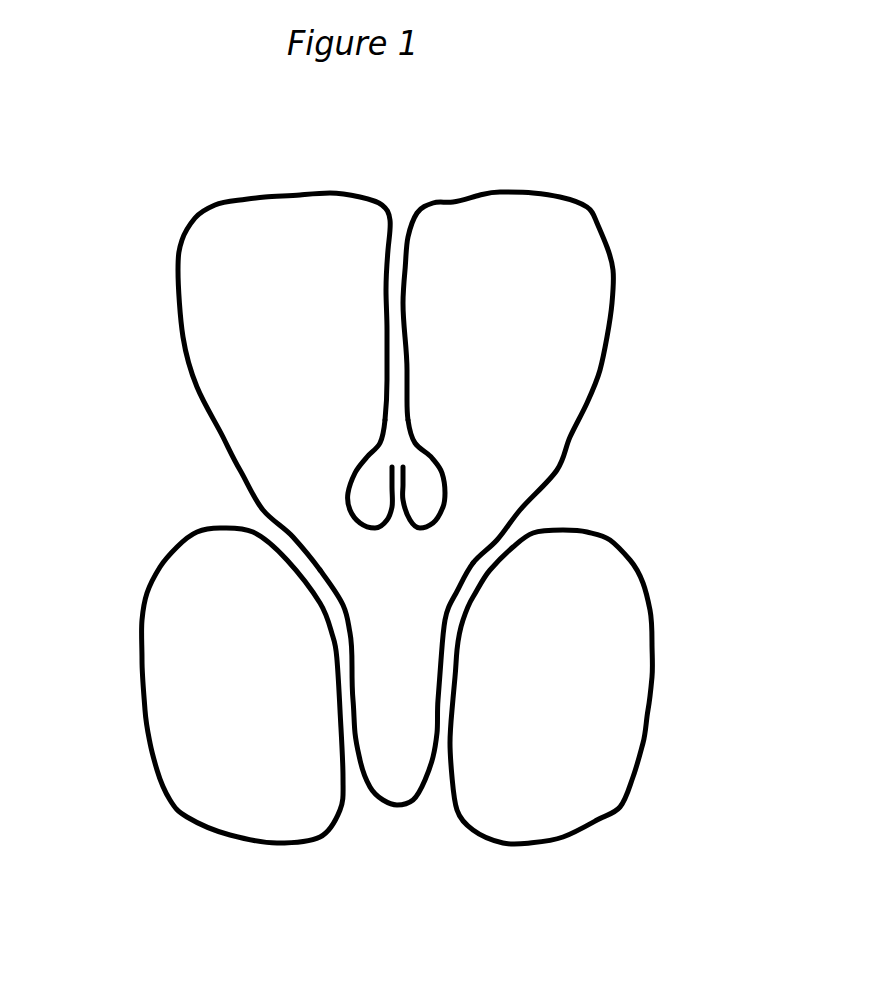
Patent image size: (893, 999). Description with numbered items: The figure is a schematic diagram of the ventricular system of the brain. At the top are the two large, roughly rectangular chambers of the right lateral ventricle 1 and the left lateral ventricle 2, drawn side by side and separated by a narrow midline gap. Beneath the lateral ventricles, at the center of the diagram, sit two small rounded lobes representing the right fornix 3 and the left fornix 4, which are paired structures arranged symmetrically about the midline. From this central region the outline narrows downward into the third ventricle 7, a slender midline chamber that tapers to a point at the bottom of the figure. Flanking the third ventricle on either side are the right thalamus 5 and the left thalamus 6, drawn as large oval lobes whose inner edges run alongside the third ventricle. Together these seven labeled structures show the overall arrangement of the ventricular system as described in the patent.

The right lateral ventricle 1 is at (277, 288).
The left lateral ventricle 2 is at (522, 288).
The right fornix 3 is at (370, 495).
The left fornix 4 is at (425, 495).
The right thalamus 5 is at (245, 673).
The left thalamus 6 is at (537, 673).
The third ventricle 7 is at (397, 722).